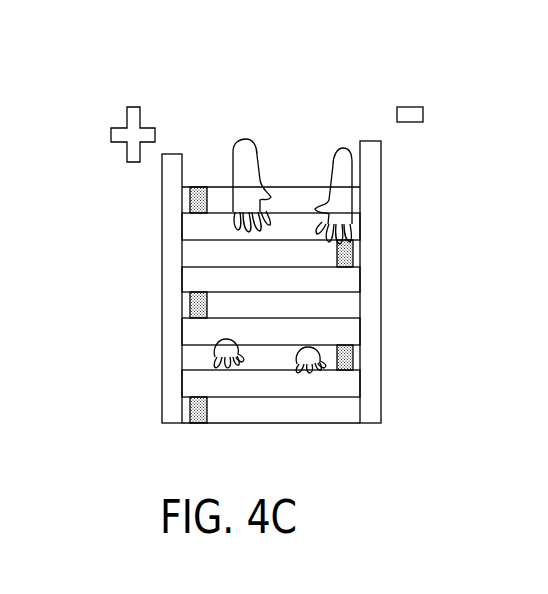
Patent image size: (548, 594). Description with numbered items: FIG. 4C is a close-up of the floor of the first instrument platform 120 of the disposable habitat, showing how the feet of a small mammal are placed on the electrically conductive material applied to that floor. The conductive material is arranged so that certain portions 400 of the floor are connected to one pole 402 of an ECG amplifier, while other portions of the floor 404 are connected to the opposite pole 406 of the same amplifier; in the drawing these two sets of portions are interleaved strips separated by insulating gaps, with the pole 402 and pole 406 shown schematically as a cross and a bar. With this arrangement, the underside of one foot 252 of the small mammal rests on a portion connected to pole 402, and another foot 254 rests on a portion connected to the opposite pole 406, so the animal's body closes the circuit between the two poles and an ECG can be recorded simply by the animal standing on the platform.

The first instrument platform 120 is at (80, 84).
The foot 252 is at (212, 350).
The another foot 254 is at (337, 170).
The portions of the floor 400 is at (177, 255).
The pole of an ECG amplifier 402 is at (110, 134).
The portions of the floor 404 is at (368, 383).
The opposite pole of the ECG amplifier 406 is at (410, 123).